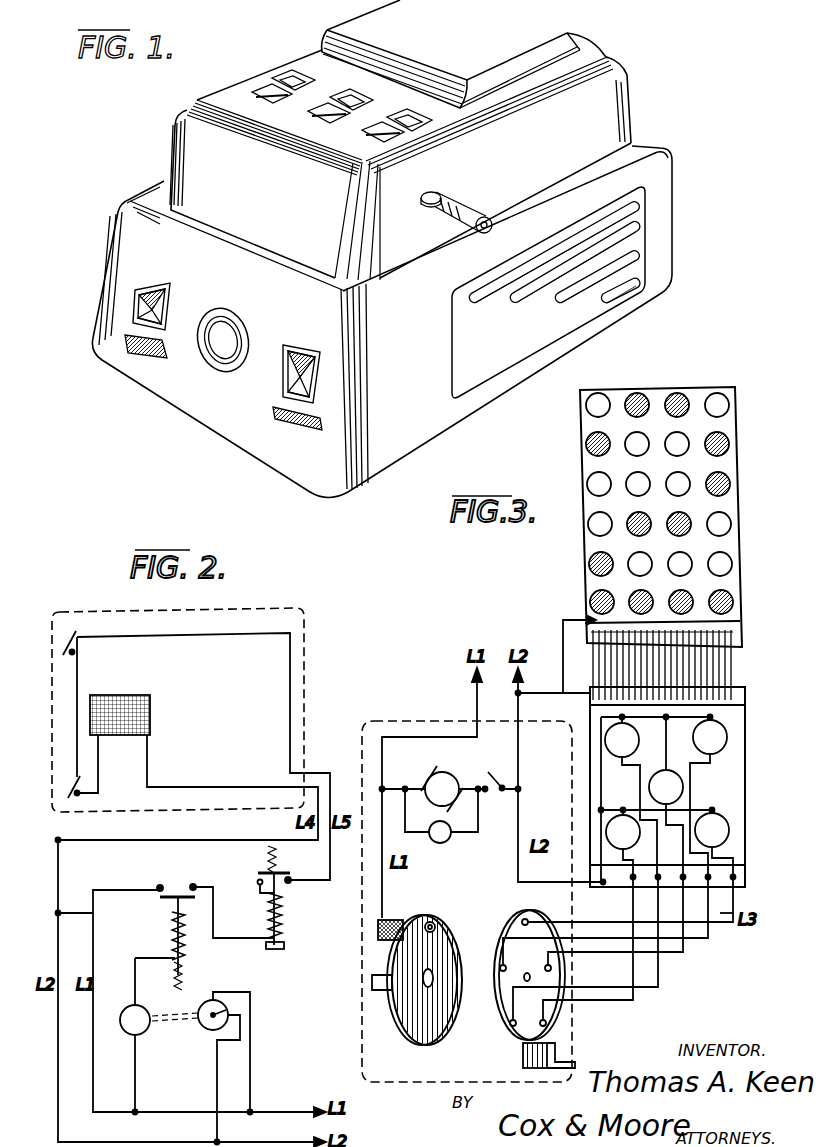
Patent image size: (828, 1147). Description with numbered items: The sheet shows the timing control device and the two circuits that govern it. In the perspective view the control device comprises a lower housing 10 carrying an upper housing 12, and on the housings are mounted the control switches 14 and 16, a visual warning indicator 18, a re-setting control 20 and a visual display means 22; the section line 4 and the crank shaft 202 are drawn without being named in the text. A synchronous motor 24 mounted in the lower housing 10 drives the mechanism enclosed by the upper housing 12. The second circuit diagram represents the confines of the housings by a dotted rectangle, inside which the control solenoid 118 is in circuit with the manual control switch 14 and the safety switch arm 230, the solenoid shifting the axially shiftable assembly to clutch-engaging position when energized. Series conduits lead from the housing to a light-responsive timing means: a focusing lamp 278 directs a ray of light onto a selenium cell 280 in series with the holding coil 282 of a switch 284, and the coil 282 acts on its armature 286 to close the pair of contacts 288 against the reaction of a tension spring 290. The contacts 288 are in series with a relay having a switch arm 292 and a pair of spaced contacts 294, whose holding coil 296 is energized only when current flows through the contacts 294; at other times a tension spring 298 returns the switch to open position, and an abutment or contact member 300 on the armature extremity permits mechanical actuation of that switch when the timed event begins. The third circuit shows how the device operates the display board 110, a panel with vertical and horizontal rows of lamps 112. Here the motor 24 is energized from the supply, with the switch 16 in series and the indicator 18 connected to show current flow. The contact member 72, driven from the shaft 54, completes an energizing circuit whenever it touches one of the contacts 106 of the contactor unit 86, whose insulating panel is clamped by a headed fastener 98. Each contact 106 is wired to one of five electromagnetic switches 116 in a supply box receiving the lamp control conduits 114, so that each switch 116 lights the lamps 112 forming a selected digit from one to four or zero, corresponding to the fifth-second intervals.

In FIG. 1, the lower housing 10 is at (383, 470).
In FIG. 1, the upper housing 12 is at (617, 85).
In FIG. 1, the control switch 14 is at (293, 370).
In FIG. 2, the control switch 14 is at (70, 645).
In FIG. 1, the control switch 16 is at (133, 307).
In FIG. 3, the control switch 16 is at (498, 778).
In FIG. 1, the visual warning indicator 18 is at (218, 358).
In FIG. 3, the visual warning indicator 18 is at (451, 838).
In FIG. 1, the re-setting control 20 is at (430, 205).
In FIG. 1, the visual display means 22 is at (410, 113).
In FIG. 1, the synchronous motor 24 is at (622, 216).
In FIG. 3, the synchronous motor 24 is at (448, 772).
In FIG. 1, the section line 4- 4 is at (637, 113).
In FIG. 1, the crank shaft 202 is at (488, 218).
In FIG. 3, the shaft 54 is at (372, 985).
In FIG. 3, the contact member 72 is at (435, 905).
In FIG. 3, the contactor unit 86 is at (528, 1027).
In FIG. 3, the headed fastener 98 is at (562, 1060).
In FIG. 3, the contact members 106 is at (503, 965).
In FIG. 3, the display board 110 is at (680, 493).
In FIG. 3, the lamps 112 is at (717, 403).
In FIG. 3, the lamp control conduits 114 is at (738, 662).
In FIG. 3, the electromagnetic switches 116 is at (732, 728).
In FIG. 2, the control solenoid 118 is at (135, 713).
In FIG. 2, the horizontal arm 230 is at (72, 780).
In FIG. 2, the focusing lamp 278 is at (222, 1003).
In FIG. 2, the selenium cell 280 is at (145, 1033).
In FIG. 2, the holding coil 282 is at (187, 930).
In FIG. 2, the switch 284 is at (162, 897).
In FIG. 2, the armature 286 is at (172, 935).
In FIG. 2, the contacts 288 is at (193, 887).
In FIG. 2, the tension spring 290 is at (175, 970).
In FIG. 2, the switch arm 292 is at (290, 872).
In FIG. 2, the contacts 294 is at (290, 884).
In FIG. 2, the coil 296 is at (283, 913).
In FIG. 2, the tension spring 298 is at (267, 852).
In FIG. 2, the abutment or contact member 300 is at (284, 947).